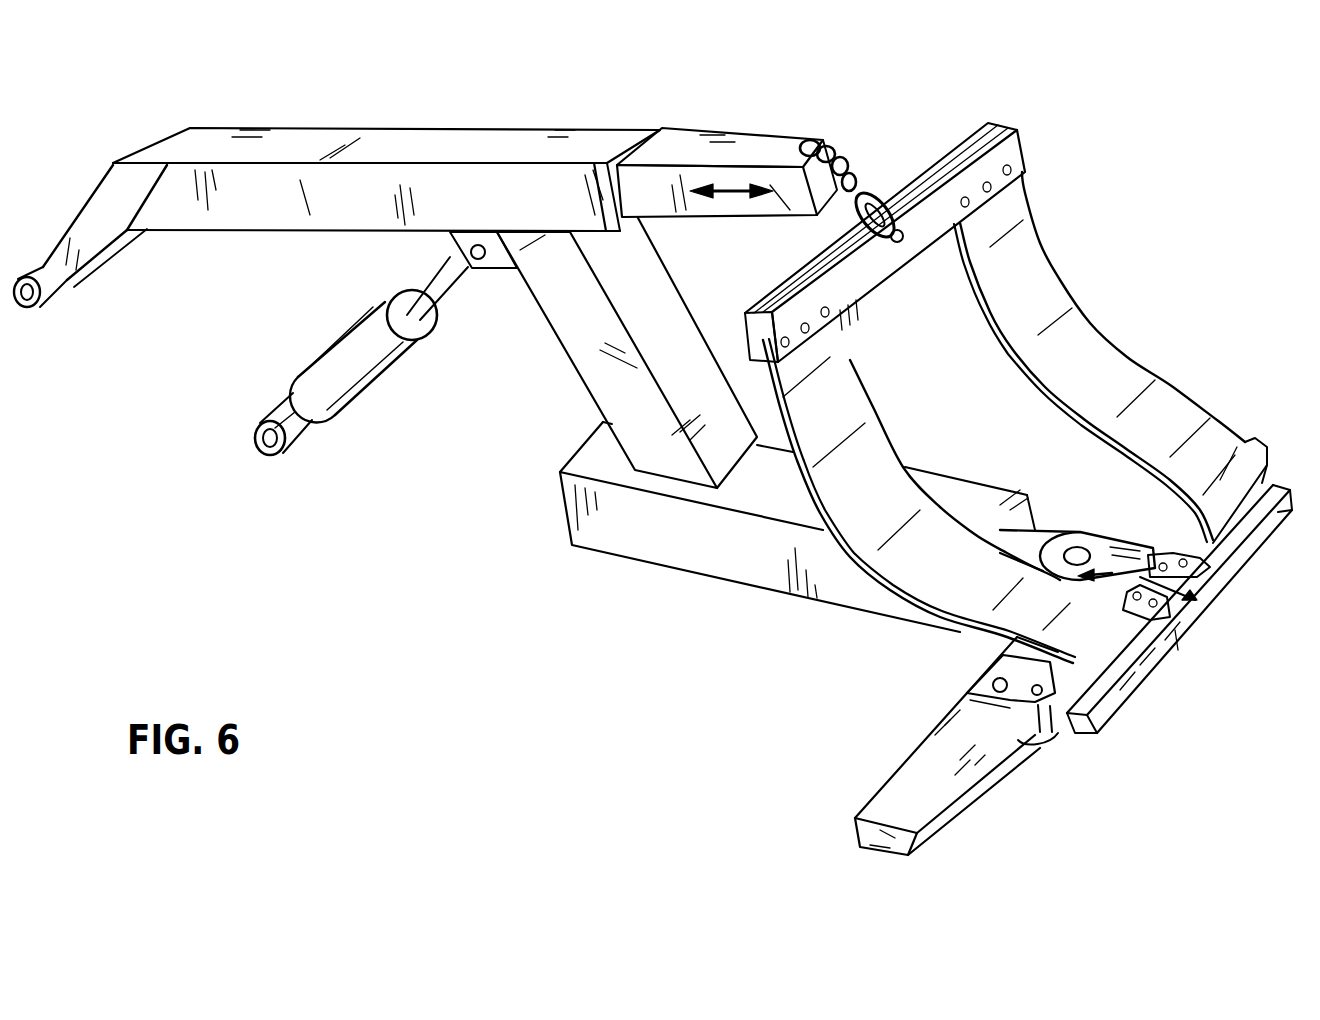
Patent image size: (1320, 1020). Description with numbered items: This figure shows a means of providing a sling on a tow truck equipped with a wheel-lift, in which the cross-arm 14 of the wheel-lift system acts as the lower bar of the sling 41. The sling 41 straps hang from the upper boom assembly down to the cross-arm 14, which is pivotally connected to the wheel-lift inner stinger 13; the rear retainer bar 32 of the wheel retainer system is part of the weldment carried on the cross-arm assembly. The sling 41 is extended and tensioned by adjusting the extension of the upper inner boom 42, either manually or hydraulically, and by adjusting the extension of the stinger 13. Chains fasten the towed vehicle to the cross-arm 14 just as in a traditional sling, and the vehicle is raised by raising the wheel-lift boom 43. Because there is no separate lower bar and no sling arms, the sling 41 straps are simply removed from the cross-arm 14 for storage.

The wheel-lift boom 43 is at (379, 148).
The upper inner boom 42 is at (768, 148).
The sling 41 is at (1055, 287).
The stinger 13 is at (1050, 527).
The rear retainer bar 32 is at (1158, 677).
The cross-arm 14 is at (935, 763).